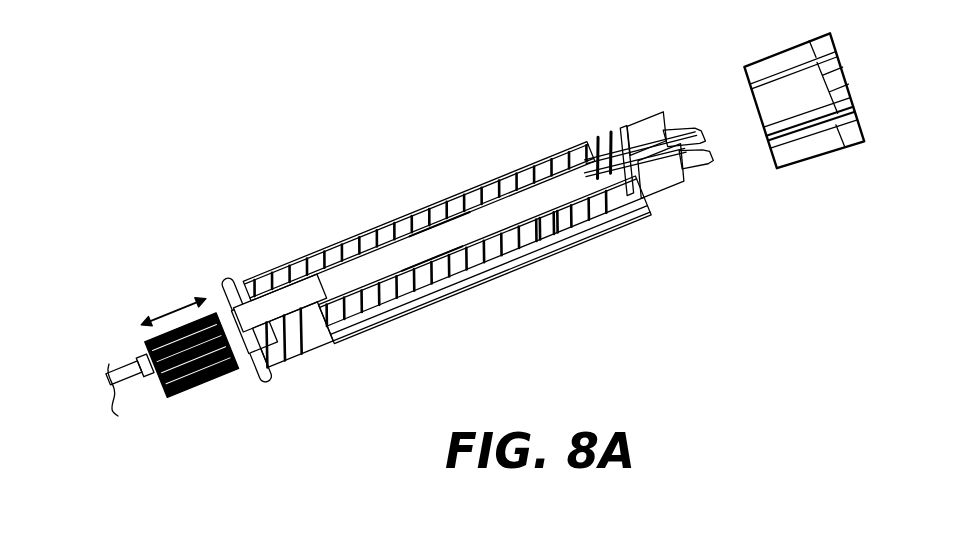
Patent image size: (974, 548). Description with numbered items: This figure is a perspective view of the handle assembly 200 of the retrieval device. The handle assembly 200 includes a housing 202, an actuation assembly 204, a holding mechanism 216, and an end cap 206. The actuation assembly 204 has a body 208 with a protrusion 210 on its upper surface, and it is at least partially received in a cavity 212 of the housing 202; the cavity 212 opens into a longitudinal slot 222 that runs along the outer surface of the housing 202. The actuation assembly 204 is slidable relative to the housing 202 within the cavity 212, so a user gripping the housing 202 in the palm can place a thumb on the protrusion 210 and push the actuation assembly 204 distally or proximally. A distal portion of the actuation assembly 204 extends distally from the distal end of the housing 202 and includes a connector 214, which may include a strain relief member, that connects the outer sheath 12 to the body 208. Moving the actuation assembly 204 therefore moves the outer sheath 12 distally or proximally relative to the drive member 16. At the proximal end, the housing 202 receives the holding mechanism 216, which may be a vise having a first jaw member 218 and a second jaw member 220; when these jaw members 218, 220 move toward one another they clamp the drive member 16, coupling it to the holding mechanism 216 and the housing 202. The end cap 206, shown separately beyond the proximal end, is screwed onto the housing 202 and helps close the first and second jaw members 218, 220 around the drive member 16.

The handle assembly 200 is at (280, 86).
The outer sheath 12 is at (128, 395).
The connector 214 is at (205, 392).
The protrusion 210 is at (311, 281).
The housing 202 is at (395, 228).
The longitudinal slot 222 is at (448, 233).
The actuation assembly 204 is at (394, 294).
The body 208 is at (426, 262).
The cavity 212 is at (553, 240).
The drive member 16 is at (637, 128).
The holding mechanism 216 is at (689, 120).
The first jaw member 218 is at (704, 124).
The second jaw member 220 is at (701, 163).
The end cap 206 is at (838, 38).